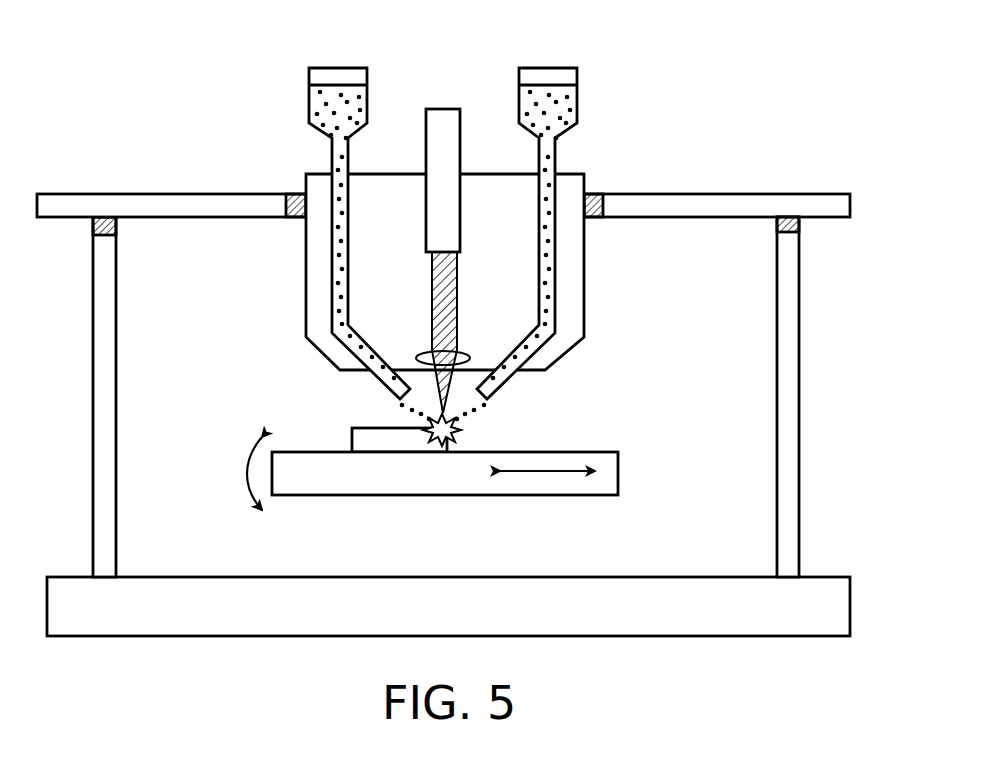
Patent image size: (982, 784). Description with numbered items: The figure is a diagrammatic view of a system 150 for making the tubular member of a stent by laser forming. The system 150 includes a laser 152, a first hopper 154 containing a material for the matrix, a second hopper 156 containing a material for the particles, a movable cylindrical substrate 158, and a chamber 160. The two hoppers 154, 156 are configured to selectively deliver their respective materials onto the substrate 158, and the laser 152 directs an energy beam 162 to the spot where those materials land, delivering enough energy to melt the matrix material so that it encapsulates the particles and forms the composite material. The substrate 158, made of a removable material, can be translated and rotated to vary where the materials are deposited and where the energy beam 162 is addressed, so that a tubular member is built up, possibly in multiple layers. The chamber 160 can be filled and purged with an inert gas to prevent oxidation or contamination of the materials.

The system 150 is at (716, 147).
The laser 152 is at (448, 108).
The first hopper 154 is at (577, 108).
The second hopper 156 is at (310, 117).
The movable cylindrical substrate 158 is at (547, 452).
The chamber 160 is at (799, 338).
The energy beam 162 is at (432, 322).